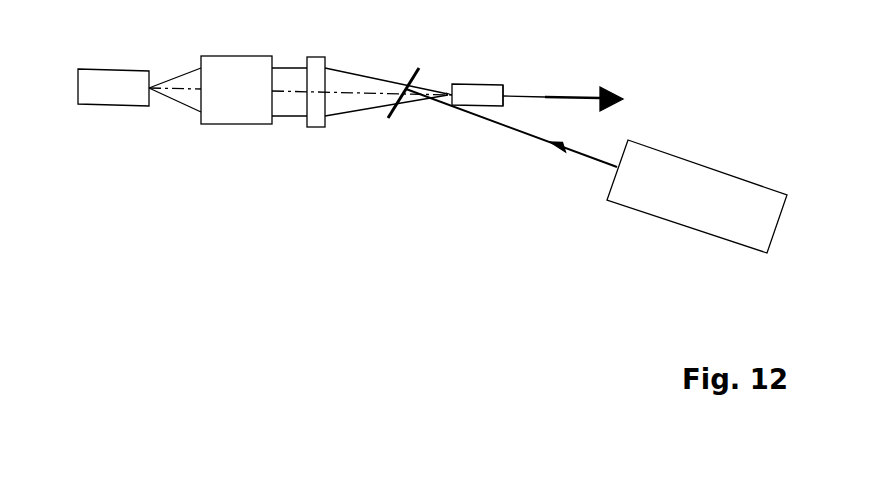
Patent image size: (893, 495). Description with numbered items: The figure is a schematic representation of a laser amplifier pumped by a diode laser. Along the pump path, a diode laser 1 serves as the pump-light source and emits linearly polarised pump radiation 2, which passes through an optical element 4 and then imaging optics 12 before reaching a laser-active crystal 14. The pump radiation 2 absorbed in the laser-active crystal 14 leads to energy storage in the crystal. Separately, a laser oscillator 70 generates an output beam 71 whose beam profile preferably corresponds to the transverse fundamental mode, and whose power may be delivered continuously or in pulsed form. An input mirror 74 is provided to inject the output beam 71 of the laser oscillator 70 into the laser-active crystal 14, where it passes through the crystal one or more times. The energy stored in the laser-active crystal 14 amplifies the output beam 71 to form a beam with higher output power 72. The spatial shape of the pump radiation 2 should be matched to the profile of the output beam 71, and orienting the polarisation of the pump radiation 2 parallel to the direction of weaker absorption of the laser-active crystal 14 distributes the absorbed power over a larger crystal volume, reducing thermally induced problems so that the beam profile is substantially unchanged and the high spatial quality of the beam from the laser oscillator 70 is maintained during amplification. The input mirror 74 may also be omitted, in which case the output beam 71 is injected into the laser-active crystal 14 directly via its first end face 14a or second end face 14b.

The diode laser 1 is at (93, 98).
The pump radiation 2 is at (173, 77).
The optical element 4 is at (257, 124).
The imaging optics 12 is at (313, 57).
The laser-active crystal 14 is at (473, 84).
The first end face 14a is at (447, 92).
The second end face 14b is at (503, 100).
The laser oscillator 70 is at (661, 219).
The output beam 71 is at (590, 160).
The beam with higher output power 72 is at (577, 95).
The input mirror 74 is at (391, 124).